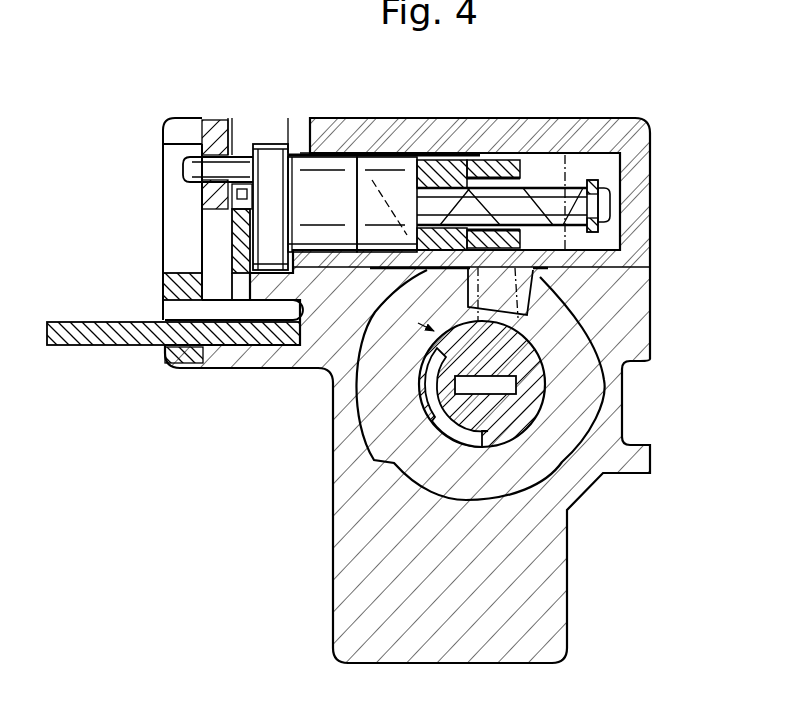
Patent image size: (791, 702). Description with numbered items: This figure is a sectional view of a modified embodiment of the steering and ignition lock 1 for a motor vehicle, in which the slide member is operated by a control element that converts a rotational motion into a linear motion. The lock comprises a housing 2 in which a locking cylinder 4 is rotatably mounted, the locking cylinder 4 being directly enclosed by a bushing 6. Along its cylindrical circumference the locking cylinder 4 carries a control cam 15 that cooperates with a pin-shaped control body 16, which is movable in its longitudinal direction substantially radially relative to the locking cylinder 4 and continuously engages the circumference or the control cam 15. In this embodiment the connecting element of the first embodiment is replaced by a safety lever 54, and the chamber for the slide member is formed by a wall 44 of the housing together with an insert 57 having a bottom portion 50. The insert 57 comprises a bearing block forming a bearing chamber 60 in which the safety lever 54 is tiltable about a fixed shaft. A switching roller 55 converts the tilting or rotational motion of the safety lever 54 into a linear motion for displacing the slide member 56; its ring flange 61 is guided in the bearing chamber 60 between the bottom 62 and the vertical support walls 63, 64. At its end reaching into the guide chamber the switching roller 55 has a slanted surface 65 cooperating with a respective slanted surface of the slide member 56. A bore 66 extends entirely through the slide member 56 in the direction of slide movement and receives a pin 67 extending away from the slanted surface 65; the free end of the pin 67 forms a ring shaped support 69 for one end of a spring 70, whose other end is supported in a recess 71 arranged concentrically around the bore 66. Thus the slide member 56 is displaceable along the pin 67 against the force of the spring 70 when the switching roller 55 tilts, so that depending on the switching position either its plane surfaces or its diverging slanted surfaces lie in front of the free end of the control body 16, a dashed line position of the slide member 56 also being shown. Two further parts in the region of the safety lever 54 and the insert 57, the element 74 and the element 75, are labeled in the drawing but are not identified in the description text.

The steering and ignition lock 1 is at (318, 594).
The housing 2 is at (330, 501).
The locking cylinder 4 is at (523, 415).
The bushing 6 is at (550, 445).
The control cam 15 is at (342, 400).
The control body 16 is at (498, 294).
The wall 44 is at (632, 207).
The bottom portion 50 is at (290, 360).
The safety lever 54 is at (208, 118).
The switching roller 55 is at (330, 176).
The slide member 56 is at (427, 172).
The insert 57 is at (162, 125).
The bearing chamber 60 is at (264, 128).
The ring flange 61 is at (272, 206).
The bottom 62 is at (236, 346).
The vertical support wall 63 is at (296, 130).
The vertical support wall 64 is at (233, 247).
The slanted surface 65 is at (379, 168).
The bore 66 is at (447, 186).
The pin 67 is at (612, 190).
The ring shaped support 69 is at (600, 224).
The spring 70 is at (572, 200).
The recess 71 is at (498, 178).
The spacer 74 is at (215, 118).
The pin 75 is at (192, 180).